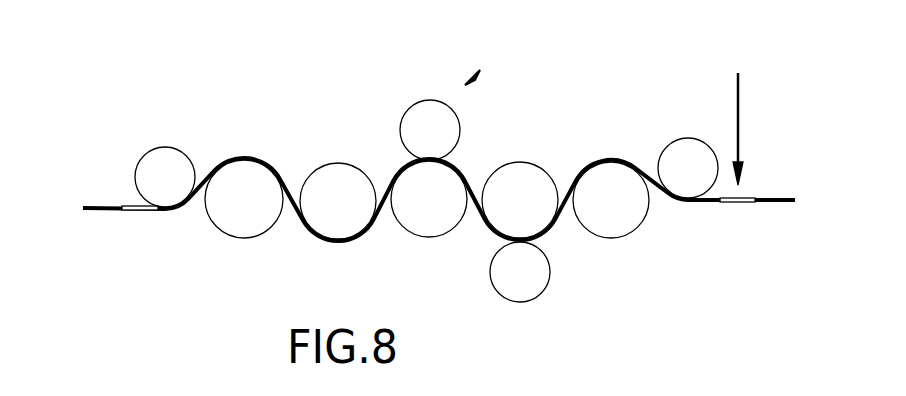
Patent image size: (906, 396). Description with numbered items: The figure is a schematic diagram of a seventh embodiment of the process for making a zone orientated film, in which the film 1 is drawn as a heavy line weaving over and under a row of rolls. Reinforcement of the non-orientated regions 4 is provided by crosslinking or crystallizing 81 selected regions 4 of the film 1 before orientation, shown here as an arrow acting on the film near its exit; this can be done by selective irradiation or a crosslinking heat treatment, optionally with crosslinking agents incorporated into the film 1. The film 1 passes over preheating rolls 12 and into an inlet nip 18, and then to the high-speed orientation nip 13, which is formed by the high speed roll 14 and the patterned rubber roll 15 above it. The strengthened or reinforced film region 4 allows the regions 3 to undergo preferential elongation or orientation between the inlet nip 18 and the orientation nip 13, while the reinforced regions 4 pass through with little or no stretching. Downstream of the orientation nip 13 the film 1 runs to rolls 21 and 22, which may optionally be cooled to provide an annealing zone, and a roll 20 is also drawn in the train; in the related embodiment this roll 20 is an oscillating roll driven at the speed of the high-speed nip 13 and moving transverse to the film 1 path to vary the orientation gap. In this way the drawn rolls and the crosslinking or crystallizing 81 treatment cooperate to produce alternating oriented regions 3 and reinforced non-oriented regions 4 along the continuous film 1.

The film 1 is at (95, 207).
The regions 3 is at (703, 203).
The non-orientated regions 4 is at (732, 203).
The heated rolls 12 is at (608, 230).
The orientation nip 13 is at (473, 78).
The high speed roll 14 is at (429, 230).
The patterned rubber roll 15 is at (452, 128).
The inlet nip 18 is at (532, 172).
The roll 20 is at (222, 218).
The downstream roll 21 is at (332, 165).
The downstream roll 22 is at (162, 157).
The crosslinking or crystallizing 81 is at (740, 105).